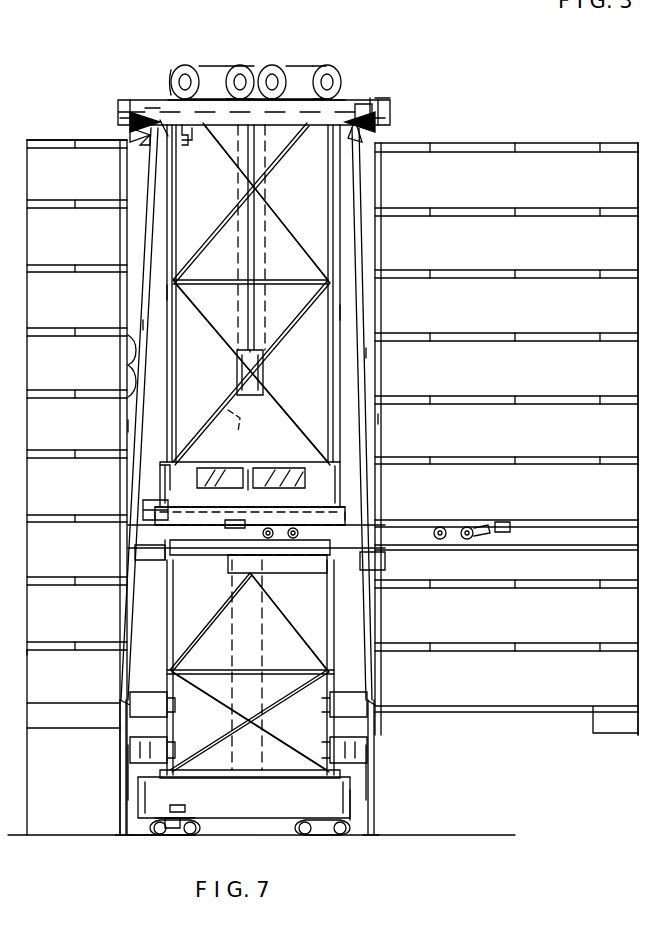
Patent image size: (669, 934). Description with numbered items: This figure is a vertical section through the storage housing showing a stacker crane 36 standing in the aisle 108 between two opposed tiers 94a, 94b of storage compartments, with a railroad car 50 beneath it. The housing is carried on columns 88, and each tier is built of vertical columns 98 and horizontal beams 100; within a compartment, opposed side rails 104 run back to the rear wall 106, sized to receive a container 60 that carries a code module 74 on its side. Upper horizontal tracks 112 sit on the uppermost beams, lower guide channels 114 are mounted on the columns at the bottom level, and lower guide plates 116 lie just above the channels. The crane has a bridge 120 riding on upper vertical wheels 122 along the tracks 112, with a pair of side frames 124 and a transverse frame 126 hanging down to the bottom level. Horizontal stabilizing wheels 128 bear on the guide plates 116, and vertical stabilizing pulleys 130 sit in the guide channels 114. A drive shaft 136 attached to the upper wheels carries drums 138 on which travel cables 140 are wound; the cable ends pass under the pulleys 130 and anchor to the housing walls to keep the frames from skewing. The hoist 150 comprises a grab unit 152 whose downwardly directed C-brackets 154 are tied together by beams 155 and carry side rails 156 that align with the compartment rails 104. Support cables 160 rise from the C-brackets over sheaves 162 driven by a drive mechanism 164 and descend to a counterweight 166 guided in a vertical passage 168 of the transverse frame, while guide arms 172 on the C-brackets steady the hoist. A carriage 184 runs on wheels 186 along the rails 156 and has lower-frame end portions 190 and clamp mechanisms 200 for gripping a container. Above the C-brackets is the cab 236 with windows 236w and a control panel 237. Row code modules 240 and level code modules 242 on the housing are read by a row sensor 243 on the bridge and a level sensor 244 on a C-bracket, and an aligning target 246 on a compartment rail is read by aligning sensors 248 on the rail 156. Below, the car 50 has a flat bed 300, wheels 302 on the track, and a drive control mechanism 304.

The stacker crane 36 is at (353, 44).
The electric railroad car 50 is at (198, 840).
The container 60 is at (345, 800).
The code module 74 is at (182, 805).
The column 88 is at (375, 805).
The tier of storage compartments 94a is at (545, 140).
The tier of storage compartments 94b is at (38, 135).
The vertical column 98 is at (128, 428).
The horizontal beam 100 is at (52, 650).
The side rail 104 is at (533, 552).
The rear wall 106 is at (638, 238).
The aisle 108 is at (133, 170).
The upper horizontal track 112 is at (132, 128).
The lower horizontal guide channel 114 is at (126, 782).
The lower guide plate 116 is at (130, 706).
The bridge 120 is at (388, 98).
The upper vertical wheel 122 is at (385, 120).
The side frame 124 is at (170, 246).
The transverse frame 126 is at (272, 210).
The horizontal stabilizing wheel 128 is at (124, 698).
The vertical stabilizing pulley 130 is at (128, 742).
The drive shaft 136 is at (290, 148).
The drum 138 is at (140, 118).
The travel cable 140 is at (143, 326).
The hoist 150 is at (345, 460).
The grab unit 152 is at (345, 482).
The C-bracket 154 is at (345, 504).
The beam 155 is at (168, 580).
The side rail 156 is at (190, 555).
The support cable 160 is at (172, 298).
The sheave 162 is at (218, 72).
The drive mechanism 164 is at (263, 49).
The counterweight 166 is at (238, 376).
The vertical passage 168 is at (240, 414).
The guide arm 172 is at (162, 470).
The carriage 184 is at (470, 525).
The wheel 186 is at (270, 540).
The end portion 190 is at (312, 548).
The clamp mechanism 200 is at (236, 578).
The cab 236 is at (256, 470).
The window 236w is at (262, 425).
The control panel 237 is at (235, 526).
The row-locating code module 240 is at (138, 135).
The level-locating code module 242 is at (128, 365).
The row sensor 243 is at (186, 146).
The level sensor 244 is at (152, 508).
The aligning target 246 is at (410, 525).
The aligning sensor 248 is at (150, 555).
The flat bed 300 is at (292, 800).
The wheel 302 is at (348, 828).
The drive control mechanism 304 is at (168, 815).